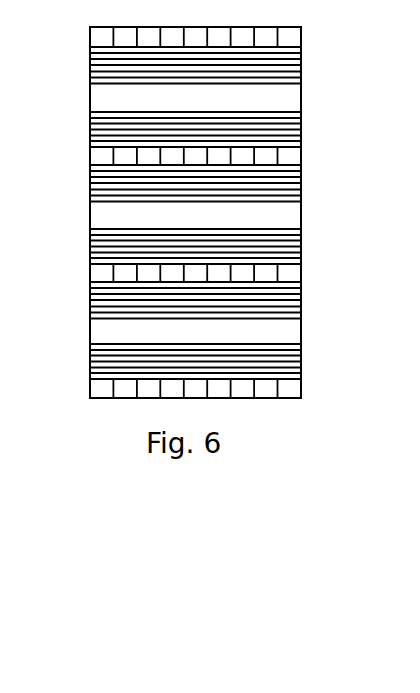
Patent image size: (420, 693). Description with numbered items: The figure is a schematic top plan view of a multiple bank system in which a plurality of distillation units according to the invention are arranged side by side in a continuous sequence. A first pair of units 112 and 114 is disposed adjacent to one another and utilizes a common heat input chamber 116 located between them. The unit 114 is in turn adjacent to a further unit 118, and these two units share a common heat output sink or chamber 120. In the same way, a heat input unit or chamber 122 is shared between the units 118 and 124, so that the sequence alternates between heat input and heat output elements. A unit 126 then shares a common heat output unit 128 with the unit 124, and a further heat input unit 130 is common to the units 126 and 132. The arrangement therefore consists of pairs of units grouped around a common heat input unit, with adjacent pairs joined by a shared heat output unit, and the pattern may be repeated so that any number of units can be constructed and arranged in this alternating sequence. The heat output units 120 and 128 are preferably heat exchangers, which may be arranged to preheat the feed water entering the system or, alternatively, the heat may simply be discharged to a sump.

The distillation unit 112 is at (95, 66).
The distillation unit 114 is at (95, 121).
The common heat input chamber 116 is at (95, 92).
The distillation unit 118 is at (95, 180).
The common heat output sink or chamber 120 is at (95, 153).
The heat input unit or chamber 122 is at (97, 210).
The distillation unit 124 is at (95, 243).
The distillation unit 126 is at (95, 298).
The common heat output unit 128 is at (97, 271).
The heat input unit 130 is at (95, 328).
The distillation unit 132 is at (95, 362).